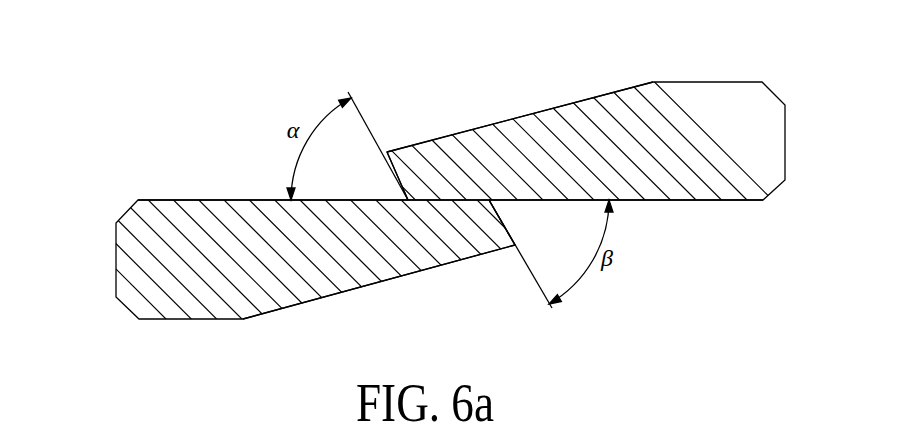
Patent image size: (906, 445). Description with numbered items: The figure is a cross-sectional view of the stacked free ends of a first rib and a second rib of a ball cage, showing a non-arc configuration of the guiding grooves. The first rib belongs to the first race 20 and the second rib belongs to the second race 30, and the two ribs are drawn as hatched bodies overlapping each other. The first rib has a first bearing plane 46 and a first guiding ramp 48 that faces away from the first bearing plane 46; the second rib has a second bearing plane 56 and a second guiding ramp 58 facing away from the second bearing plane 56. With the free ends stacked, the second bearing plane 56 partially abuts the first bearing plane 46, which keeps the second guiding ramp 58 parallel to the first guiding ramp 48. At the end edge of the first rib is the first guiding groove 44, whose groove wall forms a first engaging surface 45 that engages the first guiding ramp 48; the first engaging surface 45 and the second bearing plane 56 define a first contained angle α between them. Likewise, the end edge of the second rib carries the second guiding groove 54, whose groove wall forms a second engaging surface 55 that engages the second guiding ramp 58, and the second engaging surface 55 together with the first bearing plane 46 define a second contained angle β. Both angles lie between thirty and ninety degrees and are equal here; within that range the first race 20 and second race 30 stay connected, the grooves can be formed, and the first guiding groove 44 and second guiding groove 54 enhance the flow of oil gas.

The first race 20 is at (718, 107).
The second race 30 is at (148, 262).
The first guiding groove 44 is at (388, 194).
The first engaging surface 45 is at (428, 146).
The first bearing plane 46 is at (680, 202).
The first guiding ramp 48 is at (583, 101).
The second guiding groove 54 is at (502, 212).
The second engaging surface 55 is at (503, 224).
The second bearing plane 56 is at (237, 199).
The second guiding ramp 58 is at (287, 307).